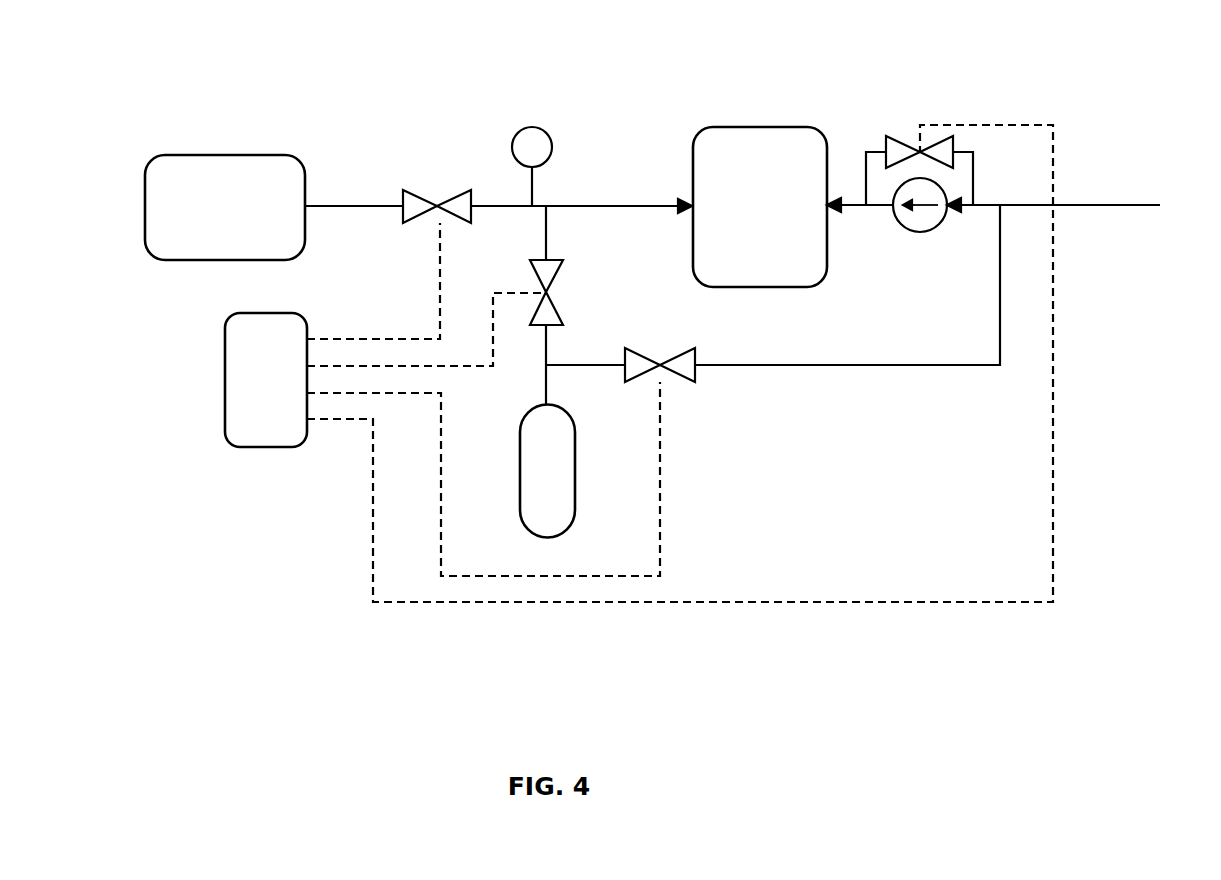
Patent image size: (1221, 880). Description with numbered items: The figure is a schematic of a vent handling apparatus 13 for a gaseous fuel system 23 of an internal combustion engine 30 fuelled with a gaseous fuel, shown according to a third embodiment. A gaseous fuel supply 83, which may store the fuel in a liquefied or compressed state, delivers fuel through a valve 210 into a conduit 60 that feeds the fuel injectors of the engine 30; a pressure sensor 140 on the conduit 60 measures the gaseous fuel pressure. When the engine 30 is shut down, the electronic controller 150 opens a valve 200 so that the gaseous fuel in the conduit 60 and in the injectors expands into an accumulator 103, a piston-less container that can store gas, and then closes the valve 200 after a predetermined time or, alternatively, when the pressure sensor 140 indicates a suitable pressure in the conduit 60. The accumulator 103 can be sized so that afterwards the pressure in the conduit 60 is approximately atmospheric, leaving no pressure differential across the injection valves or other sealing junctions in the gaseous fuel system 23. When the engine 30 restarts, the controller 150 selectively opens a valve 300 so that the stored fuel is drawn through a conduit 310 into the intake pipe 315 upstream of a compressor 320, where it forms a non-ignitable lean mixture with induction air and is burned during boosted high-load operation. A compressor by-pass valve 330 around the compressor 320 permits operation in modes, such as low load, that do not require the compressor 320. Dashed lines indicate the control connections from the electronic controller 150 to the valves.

The gaseous fuel supply 83 is at (210, 220).
The valve 210 is at (455, 192).
The pressure sensor 140 is at (512, 146).
The conduit 60 is at (593, 204).
The engine 30 is at (772, 218).
The compressor 320 is at (920, 232).
The compressor by-pass valve 330 is at (914, 140).
The intake pipe 315 is at (1102, 204).
The valve 200 is at (556, 282).
The accumulator 103 is at (528, 481).
The valve 300 is at (668, 355).
The conduit 310 is at (812, 366).
The electronic controller 150 is at (245, 392).
The vent handling apparatus 13 is at (690, 460).
The gaseous fuel system 23 is at (676, 84).